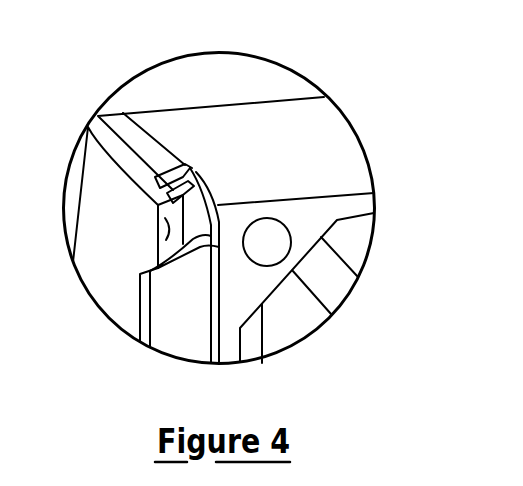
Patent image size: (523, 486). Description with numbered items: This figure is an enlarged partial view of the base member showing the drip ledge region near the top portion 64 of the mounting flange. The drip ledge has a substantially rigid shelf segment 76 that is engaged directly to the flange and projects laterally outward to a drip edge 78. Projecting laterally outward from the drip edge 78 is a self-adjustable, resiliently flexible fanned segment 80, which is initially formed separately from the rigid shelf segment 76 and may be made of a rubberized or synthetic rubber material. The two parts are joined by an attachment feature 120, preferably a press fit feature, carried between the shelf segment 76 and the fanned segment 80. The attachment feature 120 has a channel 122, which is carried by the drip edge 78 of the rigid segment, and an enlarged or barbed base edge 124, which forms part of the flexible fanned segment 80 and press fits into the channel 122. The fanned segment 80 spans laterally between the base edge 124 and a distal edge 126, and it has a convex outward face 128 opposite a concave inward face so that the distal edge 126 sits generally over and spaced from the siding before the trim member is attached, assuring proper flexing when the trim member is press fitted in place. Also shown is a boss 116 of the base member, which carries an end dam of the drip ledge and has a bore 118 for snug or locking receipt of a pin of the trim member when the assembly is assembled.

The top portion 64 is at (173, 85).
The shelf segment 76 is at (102, 183).
The drip edge 78 is at (167, 237).
The fanned segment 80 is at (162, 320).
The boss 116 is at (320, 217).
The bore 118 is at (265, 242).
The attachment feature 120 is at (185, 150).
The channel 122 is at (218, 207).
The base edge 124 is at (192, 172).
The distal edge 126 is at (143, 307).
The outward face 128 is at (195, 350).